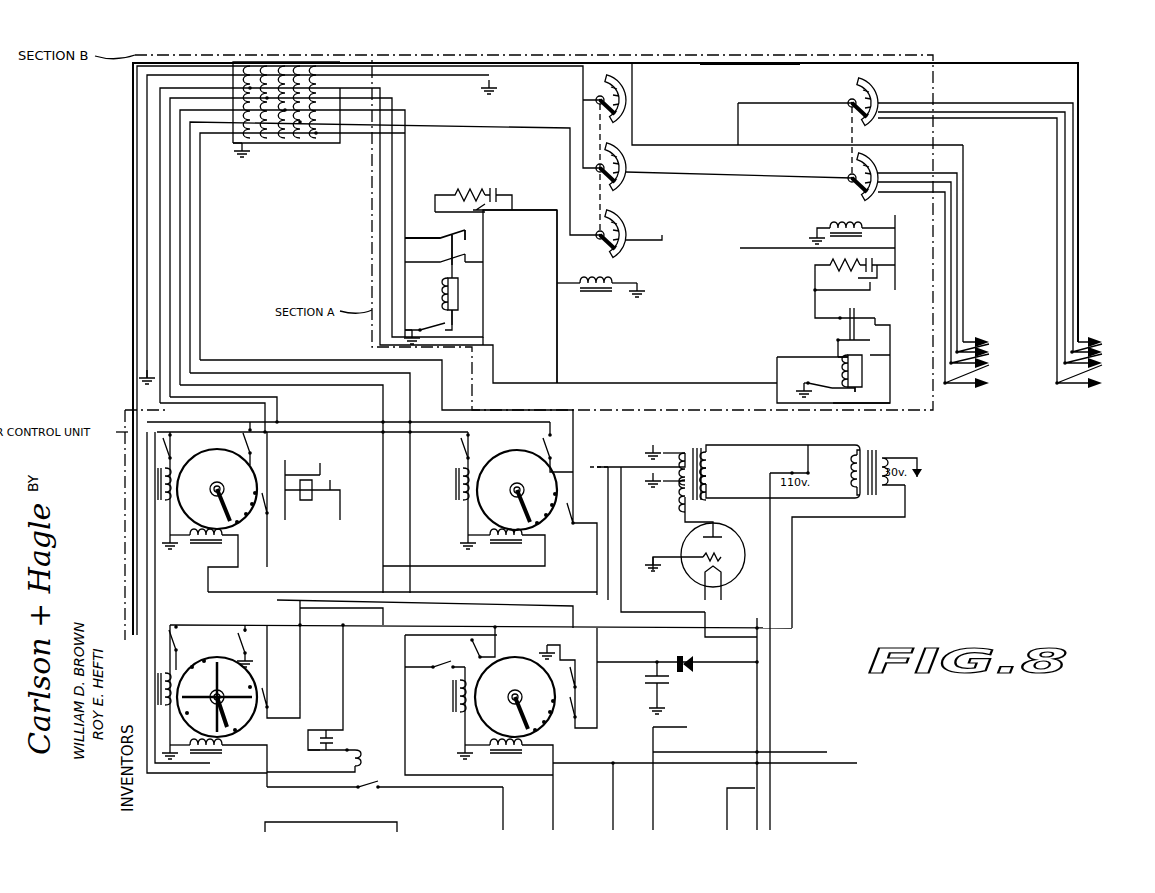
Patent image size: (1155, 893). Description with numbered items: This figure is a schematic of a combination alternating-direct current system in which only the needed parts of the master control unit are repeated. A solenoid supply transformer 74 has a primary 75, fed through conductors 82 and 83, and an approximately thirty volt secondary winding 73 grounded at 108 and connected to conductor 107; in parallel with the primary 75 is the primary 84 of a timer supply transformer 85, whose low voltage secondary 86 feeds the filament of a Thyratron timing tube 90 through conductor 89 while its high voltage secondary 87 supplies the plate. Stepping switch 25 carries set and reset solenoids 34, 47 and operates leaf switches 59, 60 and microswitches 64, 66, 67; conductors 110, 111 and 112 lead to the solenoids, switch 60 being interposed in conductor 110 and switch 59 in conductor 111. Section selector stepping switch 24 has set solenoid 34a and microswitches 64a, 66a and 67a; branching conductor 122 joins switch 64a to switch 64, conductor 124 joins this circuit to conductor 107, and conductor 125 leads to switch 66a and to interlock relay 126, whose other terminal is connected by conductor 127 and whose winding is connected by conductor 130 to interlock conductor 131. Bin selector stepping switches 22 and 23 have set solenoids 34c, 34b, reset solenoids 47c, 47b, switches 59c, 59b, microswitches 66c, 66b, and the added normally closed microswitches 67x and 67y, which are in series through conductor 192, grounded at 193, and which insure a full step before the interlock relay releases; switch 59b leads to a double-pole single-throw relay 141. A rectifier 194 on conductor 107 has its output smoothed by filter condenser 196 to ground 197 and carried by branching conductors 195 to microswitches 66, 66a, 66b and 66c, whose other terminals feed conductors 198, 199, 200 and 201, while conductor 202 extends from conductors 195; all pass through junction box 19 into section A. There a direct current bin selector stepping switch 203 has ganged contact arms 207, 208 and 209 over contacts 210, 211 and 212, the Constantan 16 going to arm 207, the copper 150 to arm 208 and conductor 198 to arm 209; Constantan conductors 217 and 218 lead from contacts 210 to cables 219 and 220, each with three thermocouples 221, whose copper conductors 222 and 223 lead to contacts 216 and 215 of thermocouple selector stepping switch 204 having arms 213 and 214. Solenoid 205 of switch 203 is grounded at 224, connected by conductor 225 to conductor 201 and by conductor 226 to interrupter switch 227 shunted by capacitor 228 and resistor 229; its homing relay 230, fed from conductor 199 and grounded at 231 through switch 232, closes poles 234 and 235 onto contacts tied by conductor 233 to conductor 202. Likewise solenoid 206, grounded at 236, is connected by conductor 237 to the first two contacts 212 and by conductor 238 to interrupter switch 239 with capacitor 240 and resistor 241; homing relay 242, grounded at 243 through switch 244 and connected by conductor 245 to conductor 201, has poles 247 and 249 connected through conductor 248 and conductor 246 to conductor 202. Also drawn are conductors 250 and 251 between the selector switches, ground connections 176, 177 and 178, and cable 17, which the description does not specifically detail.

The Constantan 16 is at (562, 70).
The copper 150 is at (581, 107).
The grounded conductor 176 is at (226, 82).
The ground connection 178 is at (145, 376).
The junction box 19 is at (273, 145).
The ground connection 177 is at (245, 165).
The conductor 198 is at (190, 305).
The conductor 199 is at (180, 270).
The conductor 200 is at (200, 246).
The conductor 201 is at (170, 222).
The conductor 202 is at (158, 200).
The conductor 192 is at (372, 422).
The contact arm 207 is at (628, 92).
The contacts 210 is at (620, 114).
The contacts 211 is at (628, 165).
The contact arm 208 is at (600, 172).
The contacts 212 is at (626, 230).
The contact arm 209 is at (602, 240).
The bin selector switch 203 is at (628, 210).
The thermocouple selector switch 204 is at (846, 160).
The conductor 217 is at (692, 145).
The conductor 218 is at (758, 67).
The conductor 251 is at (740, 128).
The conductor 250 is at (718, 180).
The contacts 215 is at (872, 96).
The contact arm 213 is at (848, 110).
The contacts 216 is at (872, 168).
The contact arm 214 is at (848, 184).
The cable 219 is at (966, 228).
The cable 220 is at (1056, 246).
The copper conductors 222 is at (962, 290).
The copper conductors 223 is at (1057, 300).
The thermocouples 221 is at (986, 347).
The ground 236 is at (812, 233).
The solenoid 206 is at (832, 222).
The conductor 237 is at (748, 250).
The conductor 238 is at (896, 254).
The resistor 241 is at (817, 276).
The capacitor 240 is at (896, 272).
The interrupter switch 239 is at (880, 288).
The conductor 248 is at (815, 304).
The upper moving pole 247 is at (855, 312).
The lower moving pole 249 is at (838, 338).
The conductor 246 is at (892, 339).
The homing relay 242 is at (870, 370).
The conductor 245 is at (777, 358).
The switch 244 is at (822, 389).
The ground 243 is at (795, 392).
The resistor 229 is at (470, 192).
The capacitor 228 is at (494, 192).
The interrupter switch 227 is at (490, 220).
The upper moving pole 234 is at (445, 240).
The lower moving pole 235 is at (445, 262).
The bin selector switch homing relay 230 is at (468, 293).
The switch 232 is at (420, 318).
The ground 231 is at (392, 325).
The conductor 233 is at (485, 325).
The conductor 226 is at (557, 262).
The conductor 225 is at (557, 362).
The solenoid 205 is at (594, 292).
The ground 224 is at (643, 296).
The switch 59c is at (163, 450).
The reset solenoid 47c is at (160, 482).
The stepping switch 22 is at (213, 483).
The set solenoid 34c is at (202, 545).
The microswitch 67x is at (258, 451).
The microswitch 66c is at (272, 515).
The relay 141 is at (322, 500).
The branching conductors 195 is at (304, 600).
The switch 59b is at (462, 455).
The reset solenoid 47b is at (458, 488).
The stepping switch 23 is at (512, 483).
The ground 193 is at (548, 474).
The set solenoid 34b is at (500, 545).
The microswitch 67y is at (560, 455).
The microswitch 66b is at (576, 510).
The low voltage secondary 86 is at (684, 450).
The high voltage secondary 87 is at (680, 495).
The timer supply transformer 85 is at (699, 464).
The primary 84 is at (710, 474).
The primary 75 is at (856, 478).
The transformer 74 is at (872, 463).
The secondary winding 73 is at (884, 466).
The ground 108 is at (915, 471).
The conductor 107 is at (906, 518).
The Thyratron timing tube 90 is at (722, 535).
The conductor 89 is at (622, 597).
The conductor 124 is at (706, 638).
The conductor 82 is at (771, 795).
The conductor 83 is at (727, 803).
The branching conductor 122 is at (345, 628).
The conductor 125 is at (345, 690).
The interlock relay 126 is at (336, 738).
The conductor 127 is at (366, 752).
The conductor 130 is at (320, 752).
The microswitch 64a is at (190, 610).
The section selector stepping switch 24 is at (207, 685).
The microswitch 67a is at (252, 649).
The microswitch 66a is at (272, 700).
The set solenoid 34a is at (205, 760).
The interlock conductor 131 is at (222, 775).
The cable 17 is at (296, 822).
The leaf switch 60 is at (362, 788).
The conductor 110 is at (503, 817).
The conductor 111 is at (556, 812).
The conductor 112 is at (613, 770).
The switch 64 is at (470, 642).
The leaf switch 59 is at (440, 663).
The reset solenoid 47 is at (458, 698).
The stepping switch 25 is at (510, 701).
The set solenoid 34 is at (495, 753).
The microswitch 67 is at (572, 680).
The microswitch 66 is at (576, 722).
The filter condenser 196 is at (645, 680).
The ground 197 is at (650, 708).
The rectifier 194 is at (688, 670).